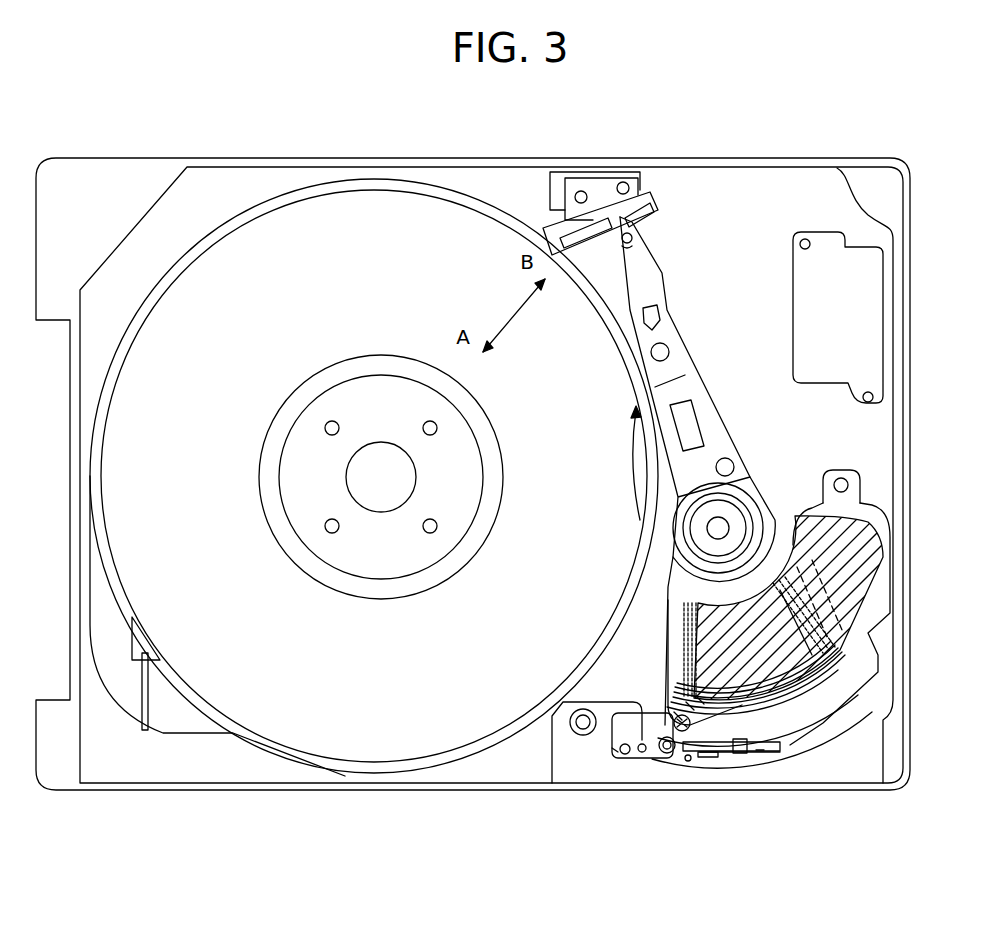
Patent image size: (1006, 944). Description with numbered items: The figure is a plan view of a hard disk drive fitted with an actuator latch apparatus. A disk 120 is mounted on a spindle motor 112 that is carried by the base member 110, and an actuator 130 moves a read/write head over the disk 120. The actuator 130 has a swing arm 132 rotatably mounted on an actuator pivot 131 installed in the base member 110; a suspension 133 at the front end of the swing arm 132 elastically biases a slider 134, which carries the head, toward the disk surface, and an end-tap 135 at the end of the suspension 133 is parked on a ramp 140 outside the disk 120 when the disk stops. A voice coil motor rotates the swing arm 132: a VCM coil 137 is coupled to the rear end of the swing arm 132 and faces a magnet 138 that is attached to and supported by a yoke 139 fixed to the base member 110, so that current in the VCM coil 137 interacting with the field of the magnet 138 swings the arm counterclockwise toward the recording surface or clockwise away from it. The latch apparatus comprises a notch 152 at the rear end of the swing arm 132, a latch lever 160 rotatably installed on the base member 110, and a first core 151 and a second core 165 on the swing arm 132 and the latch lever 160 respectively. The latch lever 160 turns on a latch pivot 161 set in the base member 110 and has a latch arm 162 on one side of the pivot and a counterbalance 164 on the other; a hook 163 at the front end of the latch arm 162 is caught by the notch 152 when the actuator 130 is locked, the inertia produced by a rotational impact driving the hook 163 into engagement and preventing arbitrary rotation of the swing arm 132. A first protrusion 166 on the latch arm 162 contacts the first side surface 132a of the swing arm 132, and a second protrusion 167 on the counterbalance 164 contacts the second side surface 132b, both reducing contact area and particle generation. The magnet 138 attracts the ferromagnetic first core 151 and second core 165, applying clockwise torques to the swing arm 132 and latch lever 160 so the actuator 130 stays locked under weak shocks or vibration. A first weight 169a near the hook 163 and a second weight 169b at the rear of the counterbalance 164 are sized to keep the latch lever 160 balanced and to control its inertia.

The base member 110 is at (468, 778).
The spindle motor 112 is at (300, 445).
The disk 120 is at (345, 210).
The actuator 130 is at (757, 469).
The actuator pivot 131 is at (722, 524).
The swing arm 132 is at (698, 418).
The first side surface 132a is at (688, 762).
The second side surface 132b is at (678, 716).
The suspension 133 is at (648, 267).
The slider 134 is at (660, 238).
The end-tap 135 is at (622, 205).
The VCM coil 137 is at (832, 662).
The magnet 138 is at (870, 548).
The yoke 139 is at (880, 515).
The ramp 140 is at (578, 215).
The first core 151 is at (690, 706).
The notch 152 is at (700, 700).
The latch lever 160 is at (722, 760).
The latch pivot 161 is at (665, 755).
The latch arm 162 is at (735, 756).
The hook 163 is at (748, 748).
The counterbalance 164 is at (645, 754).
The second core 165 is at (625, 754).
The first protrusion 166 is at (706, 758).
The second protrusion 167 is at (674, 720).
The first weight 169a is at (762, 752).
The second weight 169b is at (616, 752).